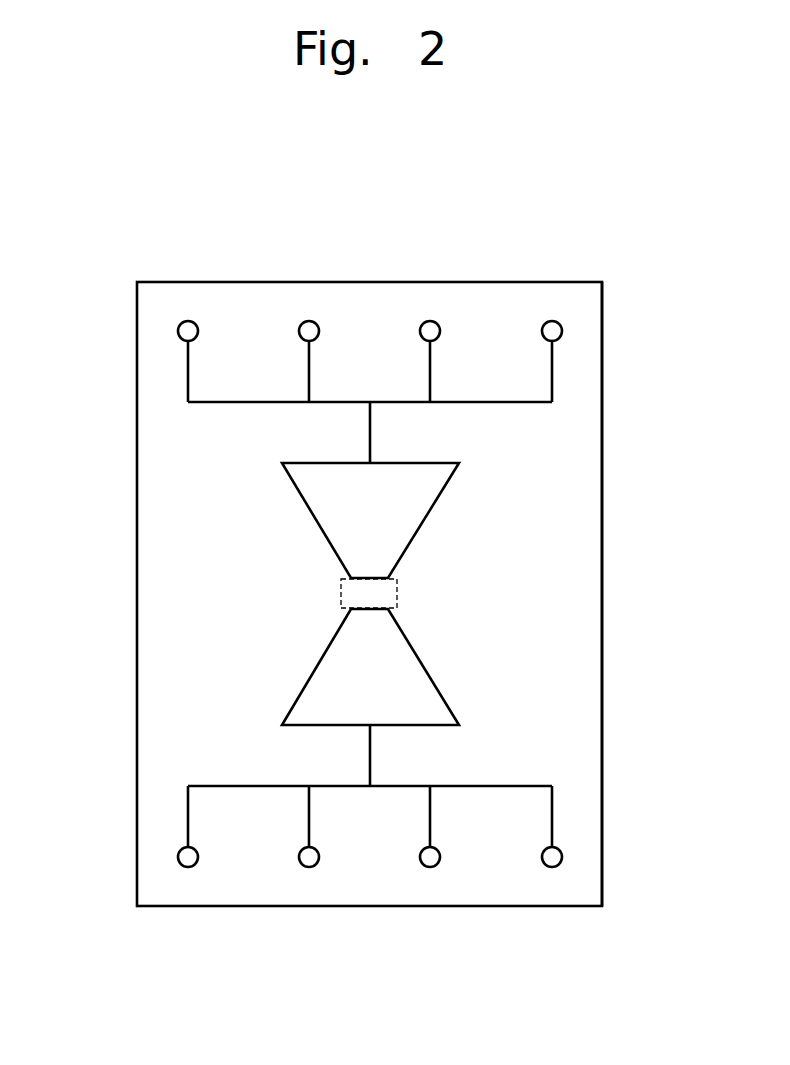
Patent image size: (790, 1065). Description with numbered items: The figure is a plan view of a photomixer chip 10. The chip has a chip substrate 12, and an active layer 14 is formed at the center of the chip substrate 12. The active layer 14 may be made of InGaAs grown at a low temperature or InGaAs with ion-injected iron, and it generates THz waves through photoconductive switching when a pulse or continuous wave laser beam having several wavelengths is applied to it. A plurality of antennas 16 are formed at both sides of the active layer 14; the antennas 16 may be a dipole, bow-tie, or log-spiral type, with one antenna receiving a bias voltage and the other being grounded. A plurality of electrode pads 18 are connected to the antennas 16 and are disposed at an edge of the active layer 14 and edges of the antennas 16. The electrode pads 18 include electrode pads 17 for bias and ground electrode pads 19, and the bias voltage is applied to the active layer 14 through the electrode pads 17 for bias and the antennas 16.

The photomixer chip 10 is at (633, 388).
The chip substrate 12 is at (590, 677).
The active layer 14 is at (398, 593).
The antennas 16 is at (417, 676).
The electrode pads for bias 17 is at (179, 331).
The electrode pads 18 is at (295, 595).
The ground electrode pads 19 is at (321, 797).